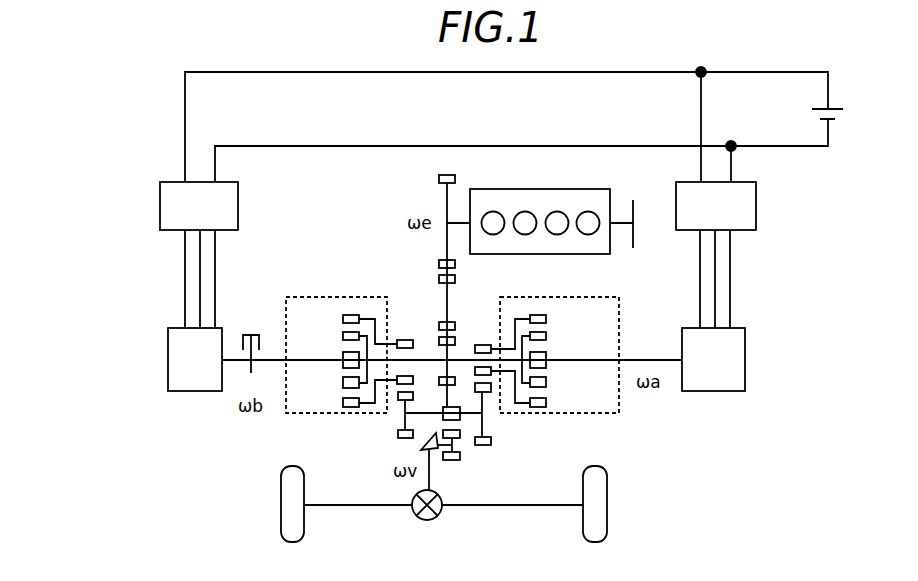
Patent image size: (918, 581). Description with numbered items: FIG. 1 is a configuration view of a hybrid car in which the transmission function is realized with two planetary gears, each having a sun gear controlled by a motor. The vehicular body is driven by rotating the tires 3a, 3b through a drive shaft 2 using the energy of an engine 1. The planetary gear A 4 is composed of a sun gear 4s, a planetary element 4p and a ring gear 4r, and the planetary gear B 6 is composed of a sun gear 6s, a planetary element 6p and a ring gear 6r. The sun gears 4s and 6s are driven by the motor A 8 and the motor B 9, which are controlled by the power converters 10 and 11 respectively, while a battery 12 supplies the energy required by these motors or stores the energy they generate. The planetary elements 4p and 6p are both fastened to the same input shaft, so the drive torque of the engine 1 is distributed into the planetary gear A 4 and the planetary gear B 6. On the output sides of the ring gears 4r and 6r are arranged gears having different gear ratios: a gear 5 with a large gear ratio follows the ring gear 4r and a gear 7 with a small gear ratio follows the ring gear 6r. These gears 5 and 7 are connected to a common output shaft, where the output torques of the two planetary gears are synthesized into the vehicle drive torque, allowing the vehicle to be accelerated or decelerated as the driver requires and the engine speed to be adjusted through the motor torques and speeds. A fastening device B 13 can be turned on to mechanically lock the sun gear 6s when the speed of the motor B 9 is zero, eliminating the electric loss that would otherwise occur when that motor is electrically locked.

The engine 1 is at (610, 189).
The drive shaft 2 is at (500, 504).
The tire 3a is at (304, 490).
The tire 3b is at (607, 490).
The planetary gear A 4 is at (550, 334).
The ring gear 4r is at (546, 319).
The sun gear 4s is at (546, 357).
The planetary element 4p is at (546, 382).
The gear 5 is at (484, 400).
The planetary gear B 6 is at (353, 332).
The ring gear 6r is at (343, 318).
The sun gear 6s is at (343, 357).
The planetary element 6p is at (343, 383).
The gear 7 is at (398, 400).
The motor A 8 is at (745, 330).
The motor B 9 is at (168, 348).
The power converter 10 is at (756, 210).
The power converter 11 is at (238, 205).
The battery 12 is at (843, 104).
The fastening device B 13 is at (251, 335).